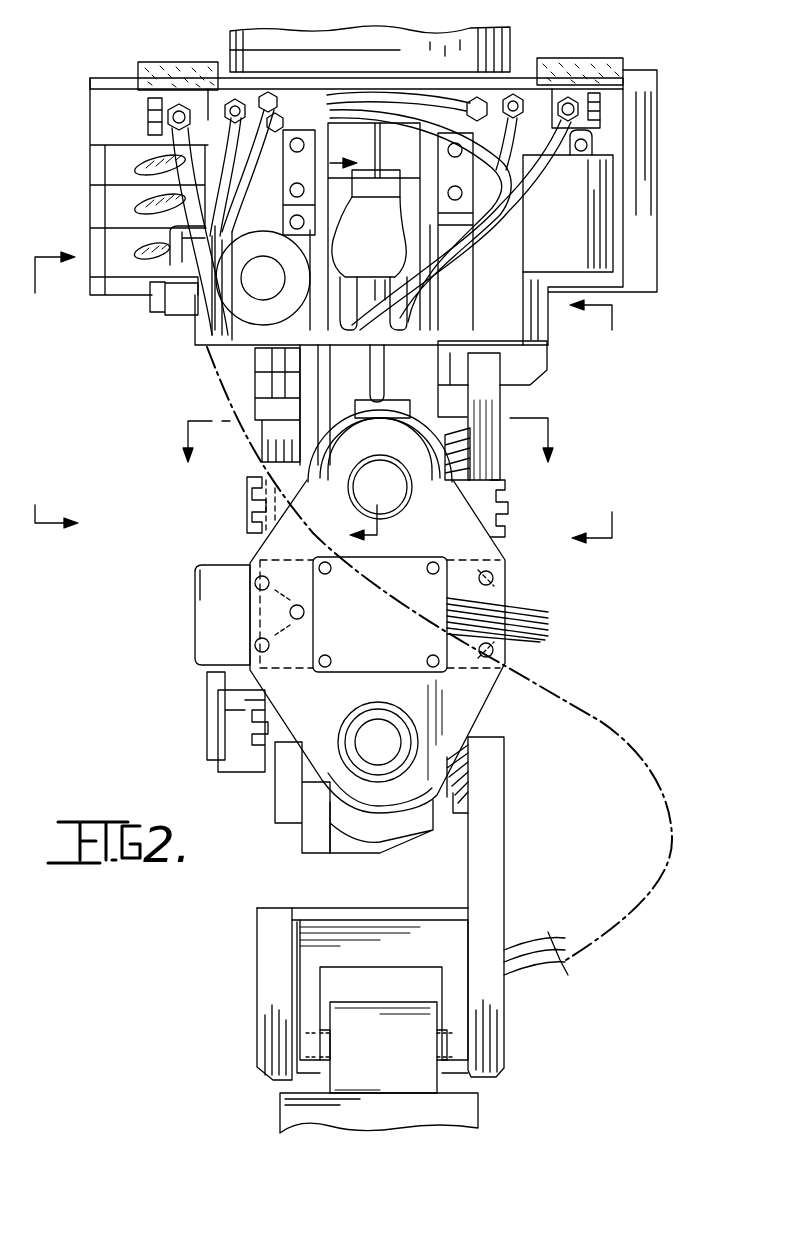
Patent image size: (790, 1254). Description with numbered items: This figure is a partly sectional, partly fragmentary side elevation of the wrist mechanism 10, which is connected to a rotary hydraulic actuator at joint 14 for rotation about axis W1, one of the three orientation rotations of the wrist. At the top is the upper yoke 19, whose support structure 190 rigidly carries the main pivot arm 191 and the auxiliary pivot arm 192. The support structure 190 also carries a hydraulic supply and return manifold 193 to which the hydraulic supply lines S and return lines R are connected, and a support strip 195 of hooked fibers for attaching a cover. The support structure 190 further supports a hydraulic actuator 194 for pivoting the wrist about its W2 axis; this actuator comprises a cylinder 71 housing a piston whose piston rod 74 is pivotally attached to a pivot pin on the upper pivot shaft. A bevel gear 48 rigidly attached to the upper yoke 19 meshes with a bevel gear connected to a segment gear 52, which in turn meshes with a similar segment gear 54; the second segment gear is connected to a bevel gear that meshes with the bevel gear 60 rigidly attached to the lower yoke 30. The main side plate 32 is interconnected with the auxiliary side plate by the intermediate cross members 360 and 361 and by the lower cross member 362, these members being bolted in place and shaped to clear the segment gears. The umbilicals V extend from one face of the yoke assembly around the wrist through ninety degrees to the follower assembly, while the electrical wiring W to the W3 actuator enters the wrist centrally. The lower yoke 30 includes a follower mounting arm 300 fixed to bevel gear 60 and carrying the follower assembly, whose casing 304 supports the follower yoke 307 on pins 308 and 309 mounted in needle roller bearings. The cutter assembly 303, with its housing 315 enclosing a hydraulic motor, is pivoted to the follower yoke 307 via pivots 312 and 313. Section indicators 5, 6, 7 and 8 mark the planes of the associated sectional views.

The joint 14 is at (512, 31).
The support structure 190 is at (100, 78).
The hydraulic supply and return manifold 193 is at (208, 105).
The support strip 195 is at (578, 60).
The hydraulic return lines R is at (135, 160).
The cylinder 71 is at (369, 250).
The hydraulic supply lines S is at (460, 240).
The hydraulic actuator 194 is at (384, 282).
The segment gear 52 is at (247, 497).
The auxiliary pivot arm 192 is at (262, 383).
The piston rod 74 is at (375, 368).
The upper yoke 19 is at (546, 386).
The main pivot arm 191 is at (482, 404).
The bevel gear 48 is at (465, 450).
The wrist mechanism 10 is at (230, 533).
The main side plate 32 is at (290, 590).
The intermediate cross member 361 is at (260, 645).
The intermediate cross member 360 is at (548, 653).
The electrical wiring W is at (548, 612).
The segment gear 54 is at (250, 715).
The lower cross member 362 is at (357, 845).
The bevel gear 60 is at (467, 813).
The follower mounting arm 300 is at (490, 860).
The umbilicals V is at (582, 703).
The lower yoke 30 is at (250, 908).
The casing 304 is at (275, 933).
The pin 308 is at (297, 980).
The housing 315 is at (383, 1047).
The pivot 312 is at (320, 1047).
The pivot 313 is at (445, 1045).
The cutter assembly 303 is at (278, 1106).
The follower yoke 307 is at (330, 945).
The pin 309 is at (465, 985).
The section line 5 is at (600, 424).
The section line 6 is at (56, 395).
The section line 7 is at (353, 342).
The section line 8 is at (366, 443).